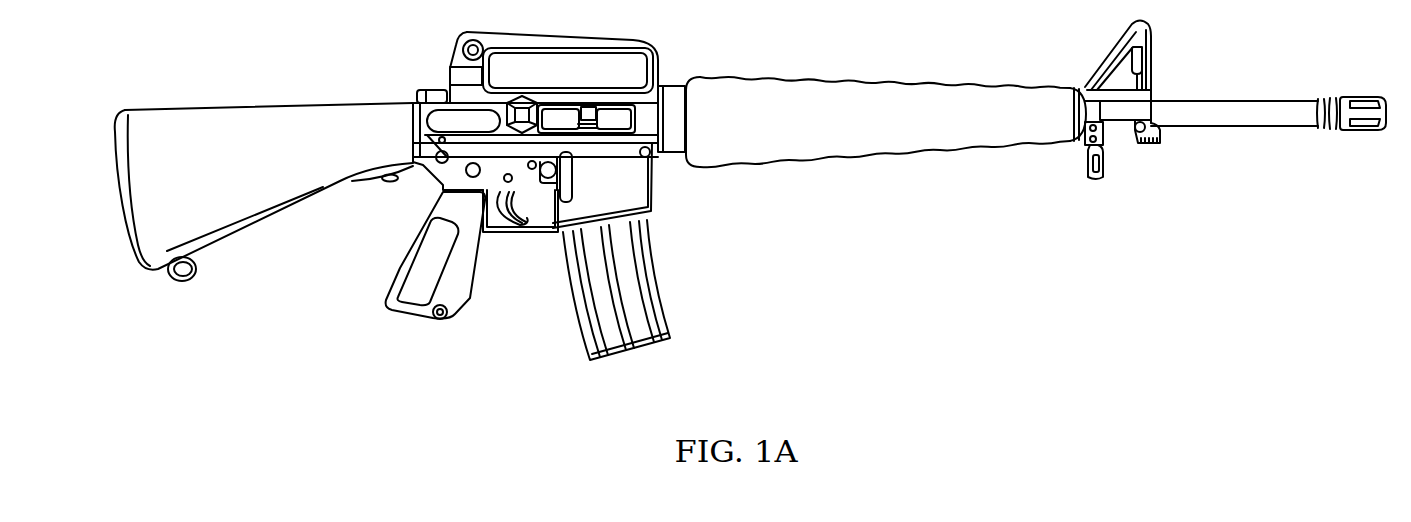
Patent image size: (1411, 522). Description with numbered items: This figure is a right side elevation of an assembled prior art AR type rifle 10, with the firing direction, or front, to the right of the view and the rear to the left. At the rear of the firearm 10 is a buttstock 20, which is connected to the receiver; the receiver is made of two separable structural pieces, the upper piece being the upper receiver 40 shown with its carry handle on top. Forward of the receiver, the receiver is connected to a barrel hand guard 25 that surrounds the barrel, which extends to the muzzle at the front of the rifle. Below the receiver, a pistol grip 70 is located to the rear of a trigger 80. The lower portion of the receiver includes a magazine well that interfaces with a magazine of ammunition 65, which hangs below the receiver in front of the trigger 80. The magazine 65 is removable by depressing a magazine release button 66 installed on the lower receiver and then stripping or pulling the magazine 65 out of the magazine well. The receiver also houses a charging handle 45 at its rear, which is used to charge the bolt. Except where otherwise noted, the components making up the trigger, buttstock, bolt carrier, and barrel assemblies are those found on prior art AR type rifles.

The rifle 10 is at (1310, 60).
The buttstock 20 is at (170, 123).
The barrel hand guard 25 is at (845, 156).
The upper receiver 40 is at (665, 82).
The charging handle 45 is at (421, 90).
The magazine 65 is at (570, 292).
The magazine release button 66 is at (556, 168).
The pistol grip 70 is at (385, 302).
The trigger 80 is at (511, 232).